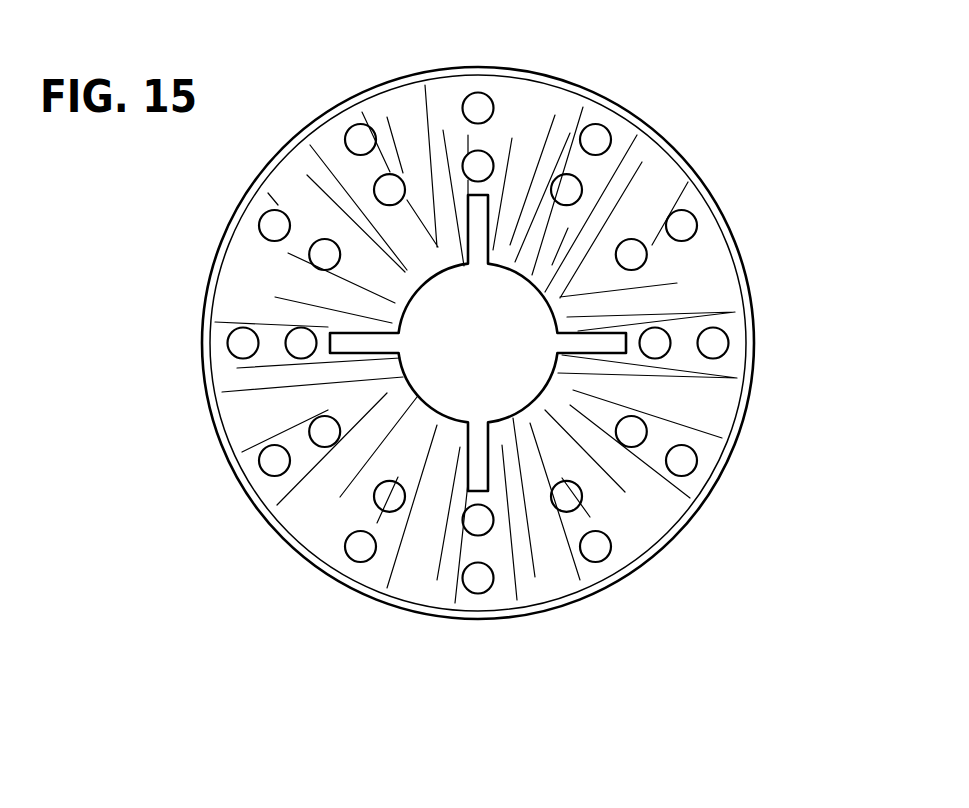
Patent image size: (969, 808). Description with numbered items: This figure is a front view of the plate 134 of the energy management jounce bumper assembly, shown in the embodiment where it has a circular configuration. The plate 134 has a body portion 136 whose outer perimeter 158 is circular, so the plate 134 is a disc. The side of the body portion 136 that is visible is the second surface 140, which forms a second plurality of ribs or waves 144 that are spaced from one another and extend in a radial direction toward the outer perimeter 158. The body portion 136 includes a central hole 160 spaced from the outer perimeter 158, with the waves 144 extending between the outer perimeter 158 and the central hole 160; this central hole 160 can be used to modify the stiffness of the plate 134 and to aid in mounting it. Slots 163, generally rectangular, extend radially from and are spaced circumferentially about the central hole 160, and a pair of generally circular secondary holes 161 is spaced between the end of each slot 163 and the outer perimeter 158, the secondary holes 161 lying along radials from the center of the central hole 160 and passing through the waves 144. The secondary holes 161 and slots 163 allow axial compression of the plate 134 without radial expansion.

The plate 134 is at (725, 99).
The body portion 136 is at (750, 288).
The second surface 140 is at (640, 517).
The second plurality of ribs or waves 144 is at (216, 348).
The outer perimeter 158 is at (463, 68).
The central hole 160 is at (557, 390).
The secondary holes 161 is at (634, 252).
The slots 163 is at (478, 490).